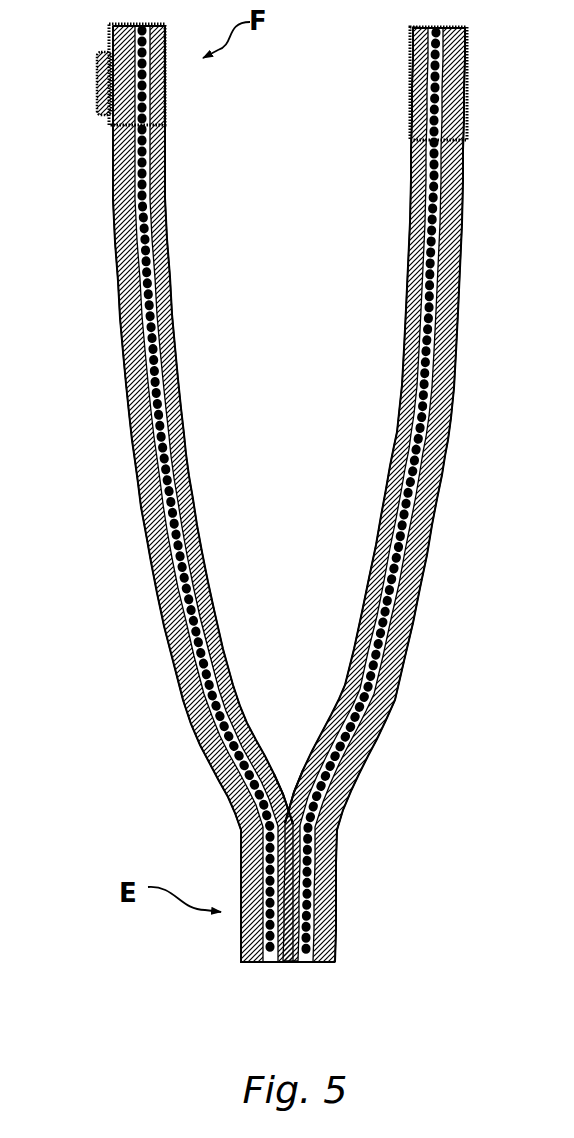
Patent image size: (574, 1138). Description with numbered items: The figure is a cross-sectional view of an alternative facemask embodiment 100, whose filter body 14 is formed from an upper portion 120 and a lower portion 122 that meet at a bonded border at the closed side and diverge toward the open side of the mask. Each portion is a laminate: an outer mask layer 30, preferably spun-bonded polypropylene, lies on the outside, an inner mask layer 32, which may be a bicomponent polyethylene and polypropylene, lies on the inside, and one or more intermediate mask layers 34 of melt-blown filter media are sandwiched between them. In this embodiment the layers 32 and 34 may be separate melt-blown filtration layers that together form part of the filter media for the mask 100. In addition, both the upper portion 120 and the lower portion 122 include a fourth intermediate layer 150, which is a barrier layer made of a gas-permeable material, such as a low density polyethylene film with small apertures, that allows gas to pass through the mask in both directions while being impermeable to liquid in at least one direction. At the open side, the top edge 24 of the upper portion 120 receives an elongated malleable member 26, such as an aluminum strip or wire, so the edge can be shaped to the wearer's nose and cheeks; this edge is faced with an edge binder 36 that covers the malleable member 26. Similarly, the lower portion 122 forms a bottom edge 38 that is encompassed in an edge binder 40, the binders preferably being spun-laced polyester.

The facemask embodiment 100 is at (293, 491).
The filter body 14 is at (280, 494).
The upper portion 120 is at (156, 658).
The lower portion 122 is at (445, 560).
The intermediate mask layer 34 is at (134, 483).
The inner mask layer 32 is at (190, 505).
The fourth intermediate layer 150 is at (167, 304).
The outer mask layer 30 is at (226, 775).
The top edge 24 is at (103, 36).
The malleable member 26 is at (100, 78).
The edge binder 36 is at (166, 85).
The bottom edge 38 is at (470, 62).
The edge binder 40 is at (467, 108).